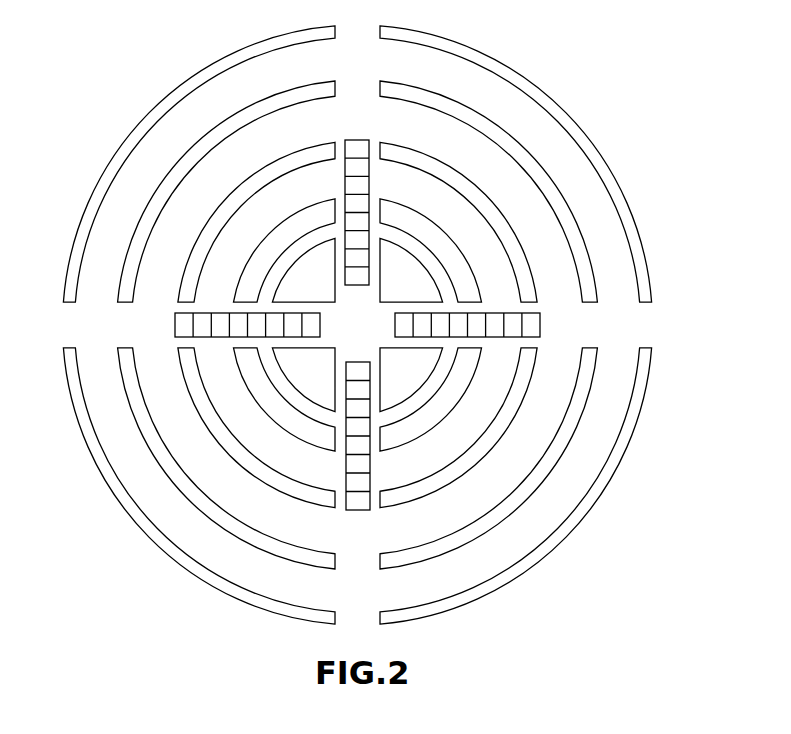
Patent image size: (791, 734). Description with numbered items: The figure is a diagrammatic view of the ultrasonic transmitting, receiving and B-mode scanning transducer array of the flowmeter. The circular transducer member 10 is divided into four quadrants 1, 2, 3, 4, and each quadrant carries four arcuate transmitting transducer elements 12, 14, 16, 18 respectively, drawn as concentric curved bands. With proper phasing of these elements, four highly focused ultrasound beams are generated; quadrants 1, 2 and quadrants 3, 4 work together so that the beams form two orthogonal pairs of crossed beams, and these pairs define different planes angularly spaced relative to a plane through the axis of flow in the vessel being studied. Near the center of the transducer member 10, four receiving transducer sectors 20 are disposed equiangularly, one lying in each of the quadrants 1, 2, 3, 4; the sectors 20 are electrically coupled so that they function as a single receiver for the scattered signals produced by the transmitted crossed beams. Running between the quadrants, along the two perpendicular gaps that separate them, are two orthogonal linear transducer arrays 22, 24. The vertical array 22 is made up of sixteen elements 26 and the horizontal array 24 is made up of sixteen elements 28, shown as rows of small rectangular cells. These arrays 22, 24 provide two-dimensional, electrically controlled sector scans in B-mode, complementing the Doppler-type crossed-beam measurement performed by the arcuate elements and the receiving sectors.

The transducer member 10 is at (92, 158).
The first quadrant 1 is at (606, 97).
The second quadrant 2 is at (126, 569).
The third quadrant 3 is at (131, 91).
The fourth quadrant 4 is at (598, 561).
The arcuate transmitting transducer elements 12 is at (538, 160).
The arcuate transmitting transducer elements 14 is at (252, 421).
The arcuate transmitting transducer elements 16 is at (172, 170).
The arcuate transmitting transducer elements 18 is at (455, 421).
The receiving transducer sectors 20 is at (325, 286).
The linear transducer array 22 is at (356, 130).
The linear transducer array 24 is at (165, 325).
The elements 26 is at (369, 185).
The elements 28 is at (395, 323).